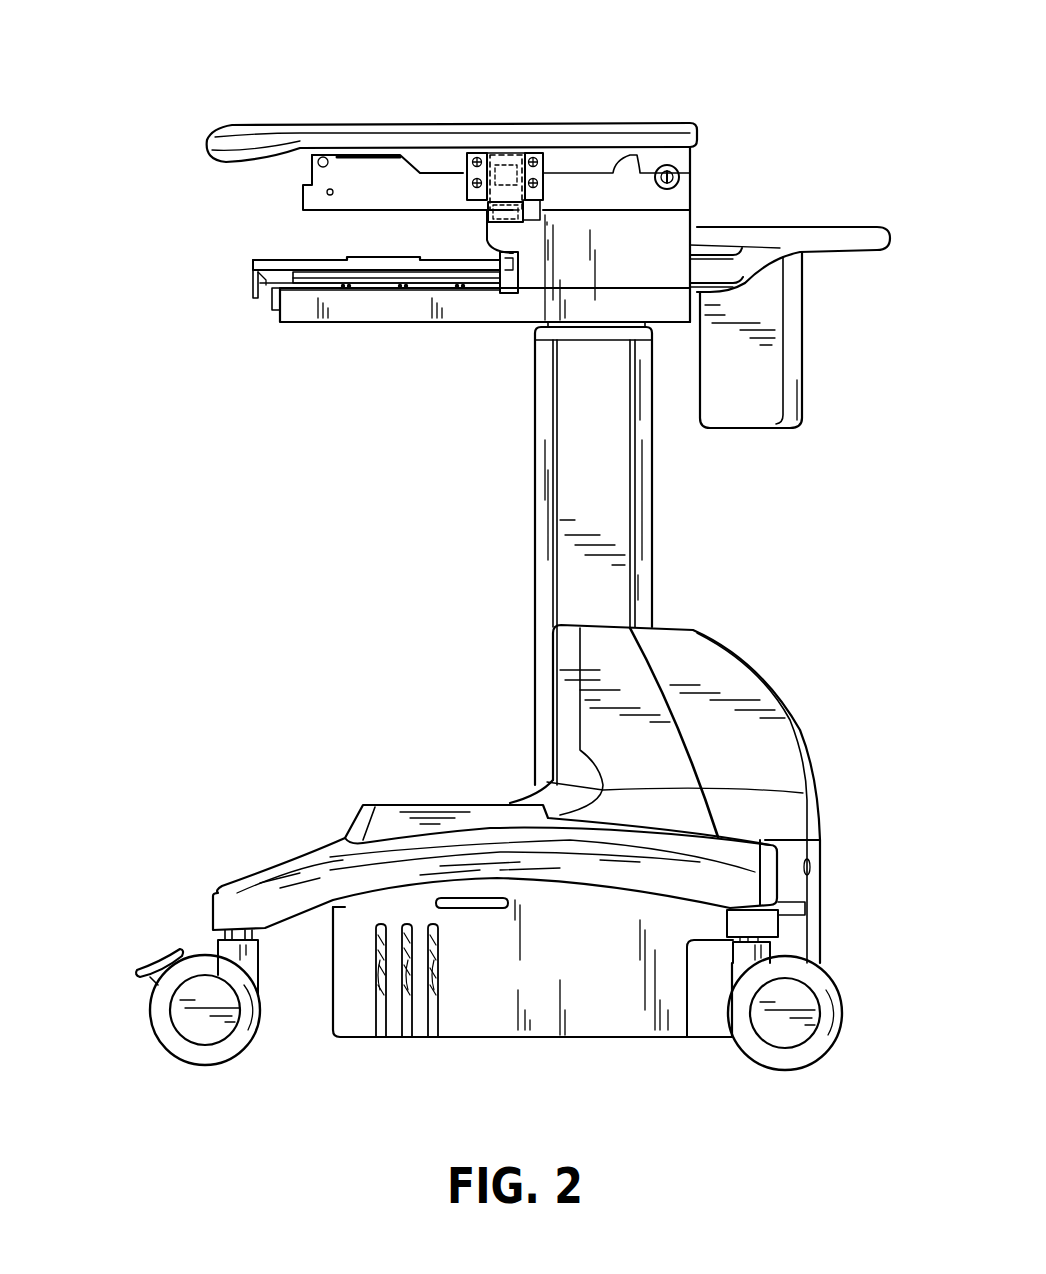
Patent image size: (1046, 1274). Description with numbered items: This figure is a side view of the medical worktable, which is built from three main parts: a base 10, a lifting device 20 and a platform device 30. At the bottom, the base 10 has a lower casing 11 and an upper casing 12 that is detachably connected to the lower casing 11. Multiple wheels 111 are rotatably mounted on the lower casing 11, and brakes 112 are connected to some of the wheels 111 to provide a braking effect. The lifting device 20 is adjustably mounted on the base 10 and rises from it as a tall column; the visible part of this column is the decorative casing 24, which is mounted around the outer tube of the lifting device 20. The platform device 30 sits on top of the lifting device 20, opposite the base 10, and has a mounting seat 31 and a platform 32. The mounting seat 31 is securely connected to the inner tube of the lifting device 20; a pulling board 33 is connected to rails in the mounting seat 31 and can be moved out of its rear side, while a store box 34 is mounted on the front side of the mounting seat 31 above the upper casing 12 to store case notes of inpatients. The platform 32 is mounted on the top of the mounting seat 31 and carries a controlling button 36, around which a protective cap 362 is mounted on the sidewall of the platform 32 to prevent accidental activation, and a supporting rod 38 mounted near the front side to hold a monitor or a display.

The platform device 30 is at (730, 73).
The platform 32 is at (431, 128).
The pulling board 33 is at (282, 265).
The mounting seat 31 is at (487, 305).
The controlling button 36 is at (512, 194).
The protective cap 362 is at (485, 215).
The supporting rod 38 is at (630, 162).
The store box 34 is at (792, 333).
The decorative casing 24 is at (641, 471).
The lifting device 20 is at (512, 533).
The upper casing 12 is at (725, 678).
The base 10 is at (318, 783).
The lower casing 11 is at (588, 1018).
The wheels 111 is at (170, 1042).
The brakes 112 is at (152, 962).